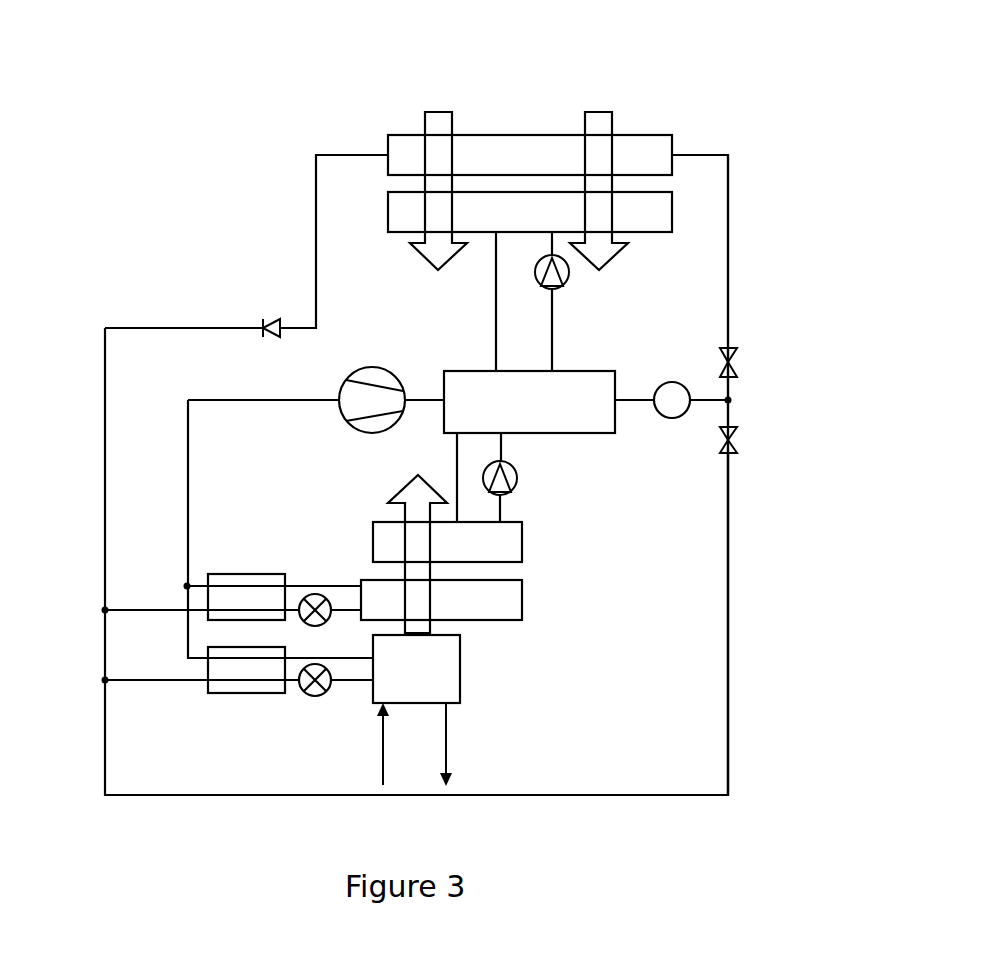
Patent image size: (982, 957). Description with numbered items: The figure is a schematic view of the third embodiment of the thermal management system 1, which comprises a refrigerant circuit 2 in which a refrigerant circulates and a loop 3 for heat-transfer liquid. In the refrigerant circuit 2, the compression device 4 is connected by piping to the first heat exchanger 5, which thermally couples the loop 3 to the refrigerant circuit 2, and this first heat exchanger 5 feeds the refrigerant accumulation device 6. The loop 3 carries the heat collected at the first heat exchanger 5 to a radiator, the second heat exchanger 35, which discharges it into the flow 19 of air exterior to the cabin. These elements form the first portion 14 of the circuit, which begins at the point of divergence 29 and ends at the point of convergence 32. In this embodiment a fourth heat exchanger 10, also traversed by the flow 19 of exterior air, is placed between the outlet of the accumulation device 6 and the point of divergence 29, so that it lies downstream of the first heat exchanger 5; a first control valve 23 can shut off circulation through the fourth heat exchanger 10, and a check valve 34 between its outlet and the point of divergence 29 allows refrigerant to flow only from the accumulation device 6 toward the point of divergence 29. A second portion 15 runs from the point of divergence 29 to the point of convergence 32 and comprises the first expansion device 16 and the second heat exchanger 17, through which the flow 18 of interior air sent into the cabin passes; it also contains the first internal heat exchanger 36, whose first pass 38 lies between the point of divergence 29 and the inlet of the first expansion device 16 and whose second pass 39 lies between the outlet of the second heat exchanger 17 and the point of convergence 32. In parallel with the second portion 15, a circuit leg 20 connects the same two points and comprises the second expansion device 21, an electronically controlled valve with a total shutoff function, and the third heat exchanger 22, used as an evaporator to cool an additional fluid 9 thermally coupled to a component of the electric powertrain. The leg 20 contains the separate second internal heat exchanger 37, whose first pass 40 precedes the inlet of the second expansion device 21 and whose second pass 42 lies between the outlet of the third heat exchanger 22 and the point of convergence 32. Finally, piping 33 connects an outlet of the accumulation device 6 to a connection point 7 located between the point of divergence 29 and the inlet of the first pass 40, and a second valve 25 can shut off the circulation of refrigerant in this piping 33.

The thermal management system 1 is at (258, 156).
The refrigerant circuit 2 is at (122, 312).
The loop for heat-transfer liquid 3 is at (478, 272).
The compression device 4 is at (357, 412).
The first heat exchanger 5 is at (584, 420).
The refrigerant accumulation device 6 is at (672, 418).
The connection point 7 is at (104, 681).
The additional fluid 9 is at (385, 728).
The fourth heat exchanger 10 is at (507, 142).
The first portion 14 is at (756, 322).
The second portion 15 is at (255, 555).
The first expansion device 16 is at (303, 624).
The second heat exchanger 17 is at (510, 600).
The flow of interior air 18 is at (418, 477).
The flow of exterior air 19 is at (440, 128).
The circuit leg 20 is at (202, 707).
The second expansion device 21 is at (313, 697).
The third heat exchanger 22 is at (450, 660).
The first control valve 23 is at (737, 358).
The second valve 25 is at (736, 446).
The point of divergence 29 is at (104, 609).
The point of convergence 32 is at (185, 585).
The piping 33 is at (728, 605).
The check valve 34 is at (274, 320).
The second heat exchanger of the loop 35 is at (645, 218).
The first internal heat exchanger 36 is at (238, 576).
The second internal heat exchanger 37 is at (202, 707).
The first pass 38 is at (237, 612).
The second pass 39 is at (255, 576).
The first pass 40 is at (230, 683).
The second pass 42 is at (272, 655).